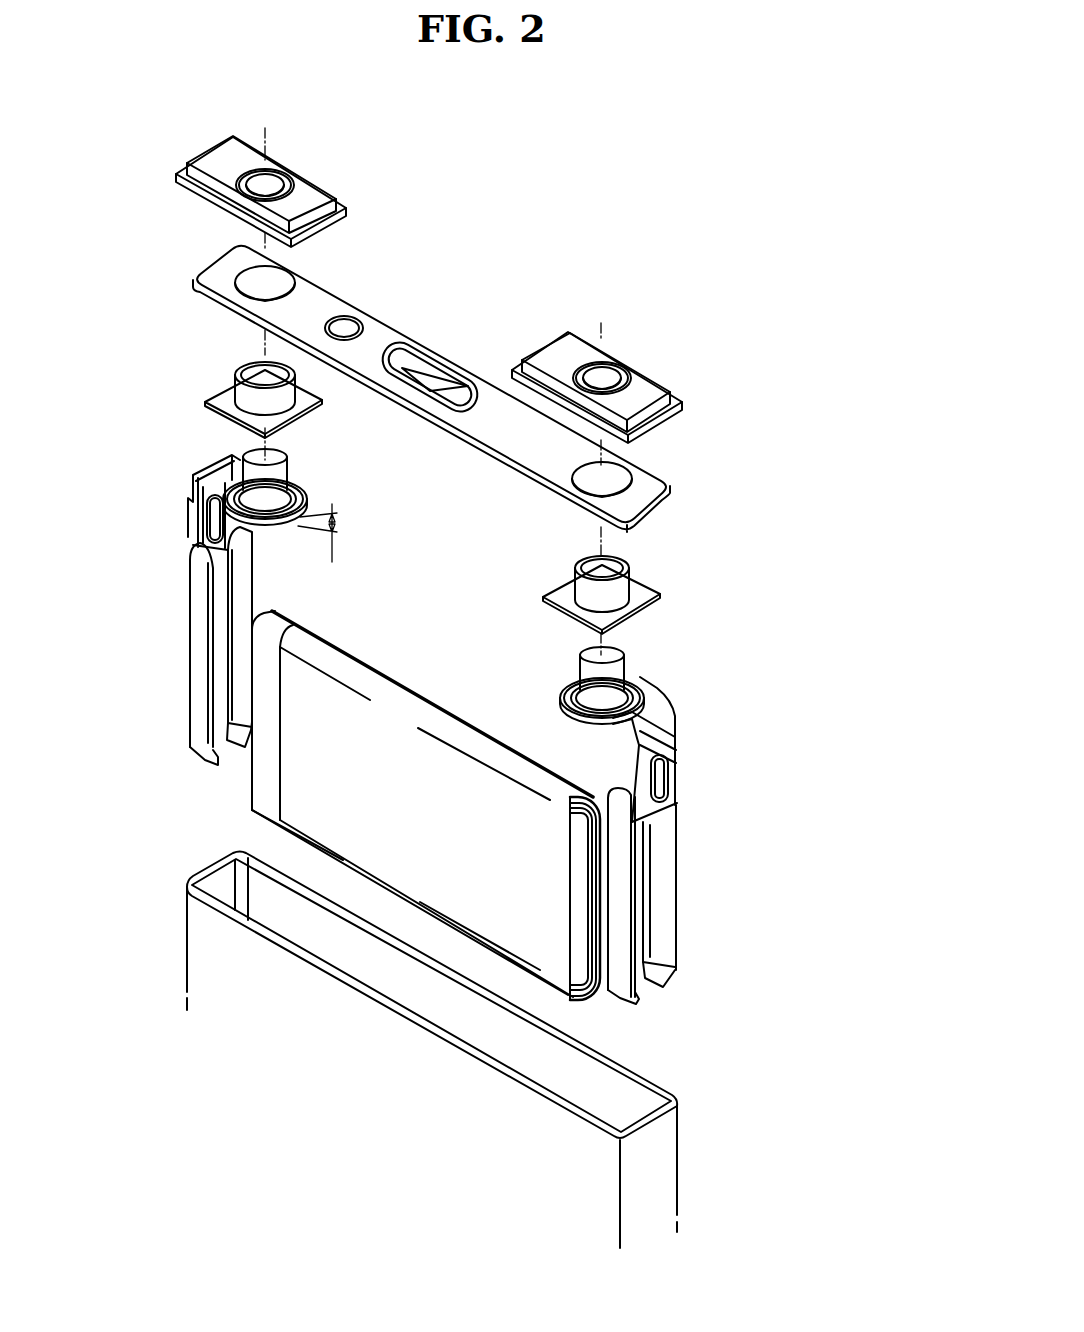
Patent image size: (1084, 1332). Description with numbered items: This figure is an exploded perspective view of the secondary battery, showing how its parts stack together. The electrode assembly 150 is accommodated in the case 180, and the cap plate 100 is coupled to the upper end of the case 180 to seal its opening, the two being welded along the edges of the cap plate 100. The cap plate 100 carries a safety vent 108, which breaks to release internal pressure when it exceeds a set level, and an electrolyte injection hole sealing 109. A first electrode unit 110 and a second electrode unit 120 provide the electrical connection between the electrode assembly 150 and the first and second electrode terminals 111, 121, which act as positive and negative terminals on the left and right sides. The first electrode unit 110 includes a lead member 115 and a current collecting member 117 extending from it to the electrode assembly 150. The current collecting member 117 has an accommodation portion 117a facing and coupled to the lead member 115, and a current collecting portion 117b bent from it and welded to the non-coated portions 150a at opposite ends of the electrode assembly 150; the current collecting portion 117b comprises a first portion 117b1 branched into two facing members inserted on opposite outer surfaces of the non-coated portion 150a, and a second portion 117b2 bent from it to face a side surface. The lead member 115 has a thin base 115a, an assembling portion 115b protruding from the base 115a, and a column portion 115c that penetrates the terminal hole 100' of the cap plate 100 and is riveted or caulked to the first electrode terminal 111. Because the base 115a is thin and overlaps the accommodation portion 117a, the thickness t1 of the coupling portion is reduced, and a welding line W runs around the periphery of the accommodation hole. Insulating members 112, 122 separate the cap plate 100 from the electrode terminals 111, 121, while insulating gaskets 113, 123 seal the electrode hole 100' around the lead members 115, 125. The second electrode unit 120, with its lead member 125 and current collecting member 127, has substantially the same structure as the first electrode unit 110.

The cap plate 100 is at (395, 380).
The terminal hole 100' is at (396, 412).
The safety vent 108 is at (437, 385).
The electrolyte injection hole sealing 109 is at (345, 323).
The first electrode unit 110 is at (667, 809).
The first electrode terminal 111 is at (640, 380).
The insulating member 112 is at (683, 407).
The insulating gasket 113 is at (630, 588).
The lead member 115 is at (531, 669).
The base 115a is at (582, 707).
The assembling portion 115b is at (572, 678).
The column portion 115c is at (587, 652).
The current collecting member 117 is at (762, 840).
The accommodation portion 117a is at (653, 693).
The current collecting portion 117b is at (733, 861).
The first portion 117b1 is at (675, 830).
The second portion 117b2 is at (673, 755).
The second electrode unit 120 is at (162, 603).
The second electrode terminal 121 is at (305, 190).
The insulating member 122 is at (348, 211).
The insulating gasket 123 is at (240, 393).
The lead member 125 is at (290, 457).
The current collecting member 127 is at (190, 602).
The electrode assembly 150 is at (376, 809).
The non-coated portion 150a is at (267, 807).
The case 180 is at (672, 1157).
The welding line W is at (642, 680).
The thickness of the coupling portion t1 is at (330, 533).